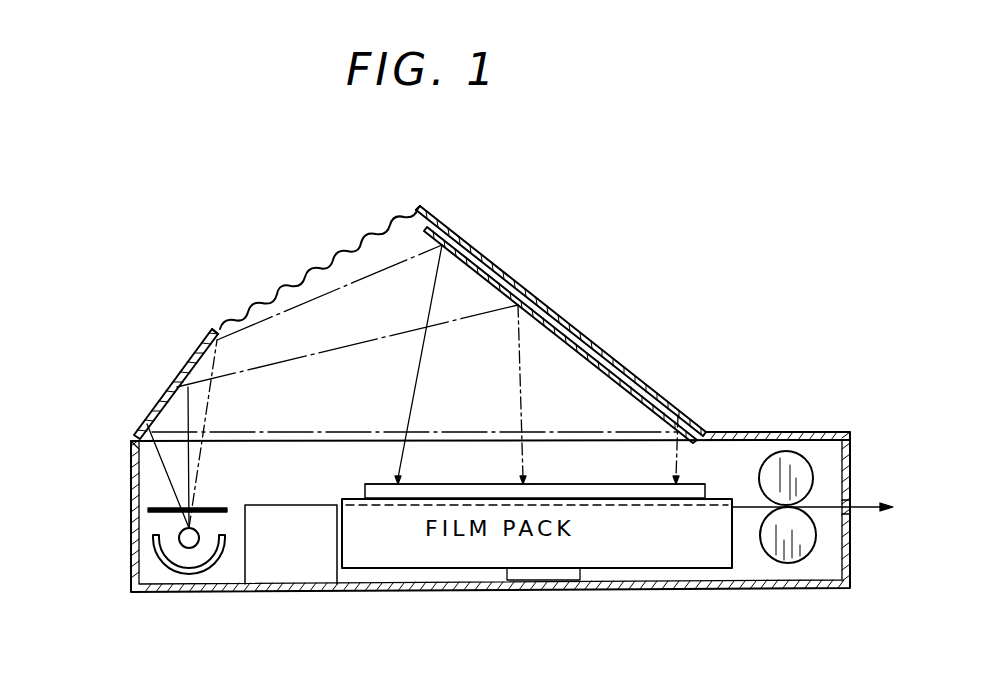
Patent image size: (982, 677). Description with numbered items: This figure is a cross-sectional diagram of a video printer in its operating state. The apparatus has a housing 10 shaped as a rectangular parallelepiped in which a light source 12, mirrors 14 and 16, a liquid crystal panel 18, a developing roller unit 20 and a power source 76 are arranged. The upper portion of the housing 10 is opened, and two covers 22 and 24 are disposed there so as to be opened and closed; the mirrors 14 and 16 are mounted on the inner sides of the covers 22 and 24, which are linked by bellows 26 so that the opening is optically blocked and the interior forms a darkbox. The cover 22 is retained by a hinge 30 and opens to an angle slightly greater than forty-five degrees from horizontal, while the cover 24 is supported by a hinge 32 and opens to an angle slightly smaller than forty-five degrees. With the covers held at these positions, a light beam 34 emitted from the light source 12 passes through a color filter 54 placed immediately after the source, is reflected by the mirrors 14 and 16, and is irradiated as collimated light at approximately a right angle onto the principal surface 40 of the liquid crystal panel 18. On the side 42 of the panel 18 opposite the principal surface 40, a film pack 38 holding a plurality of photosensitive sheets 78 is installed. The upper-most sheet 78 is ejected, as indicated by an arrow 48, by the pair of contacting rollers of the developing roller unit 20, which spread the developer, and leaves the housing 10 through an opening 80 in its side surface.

The housing 10 is at (693, 590).
The light source 12 is at (172, 570).
The mirror 14 is at (157, 408).
The mirror 16 is at (553, 326).
The liquid crystal panel 18 is at (607, 483).
The developing roller unit 20 is at (768, 453).
The cover 22 is at (205, 333).
The cover 24 is at (490, 258).
The bellows 26 is at (300, 269).
The hinge 30 is at (131, 441).
The hinge 32 is at (702, 441).
The light beam 34 is at (336, 428).
The film pack 38 is at (580, 580).
The principal surface 40 is at (453, 484).
The side 42 is at (554, 484).
The arrow 48 is at (866, 507).
The color filter 54 is at (148, 510).
The power source 76 is at (275, 505).
The photosensitive sheet 78 is at (640, 507).
The opening 80 is at (852, 515).